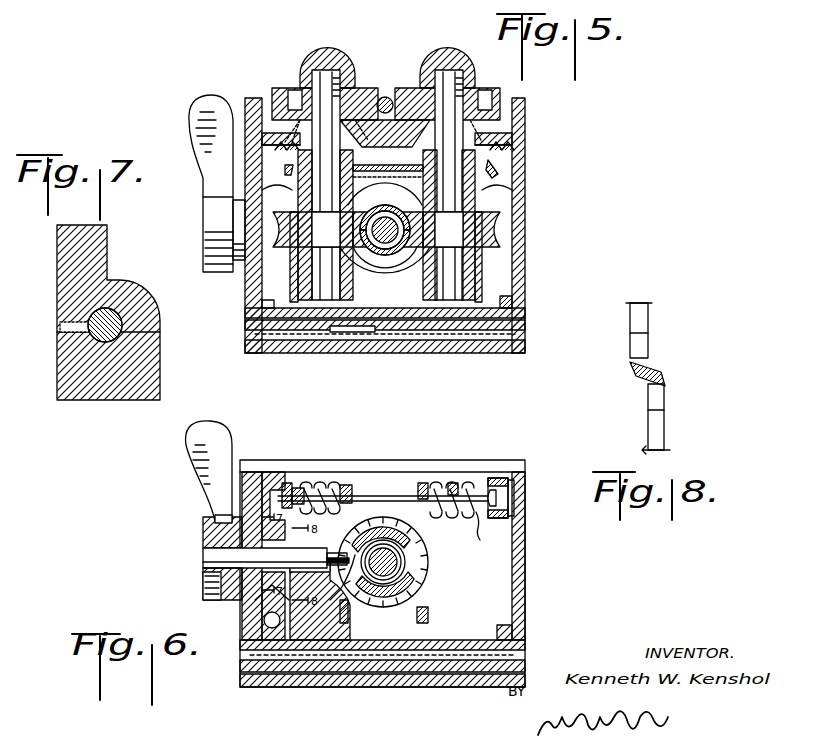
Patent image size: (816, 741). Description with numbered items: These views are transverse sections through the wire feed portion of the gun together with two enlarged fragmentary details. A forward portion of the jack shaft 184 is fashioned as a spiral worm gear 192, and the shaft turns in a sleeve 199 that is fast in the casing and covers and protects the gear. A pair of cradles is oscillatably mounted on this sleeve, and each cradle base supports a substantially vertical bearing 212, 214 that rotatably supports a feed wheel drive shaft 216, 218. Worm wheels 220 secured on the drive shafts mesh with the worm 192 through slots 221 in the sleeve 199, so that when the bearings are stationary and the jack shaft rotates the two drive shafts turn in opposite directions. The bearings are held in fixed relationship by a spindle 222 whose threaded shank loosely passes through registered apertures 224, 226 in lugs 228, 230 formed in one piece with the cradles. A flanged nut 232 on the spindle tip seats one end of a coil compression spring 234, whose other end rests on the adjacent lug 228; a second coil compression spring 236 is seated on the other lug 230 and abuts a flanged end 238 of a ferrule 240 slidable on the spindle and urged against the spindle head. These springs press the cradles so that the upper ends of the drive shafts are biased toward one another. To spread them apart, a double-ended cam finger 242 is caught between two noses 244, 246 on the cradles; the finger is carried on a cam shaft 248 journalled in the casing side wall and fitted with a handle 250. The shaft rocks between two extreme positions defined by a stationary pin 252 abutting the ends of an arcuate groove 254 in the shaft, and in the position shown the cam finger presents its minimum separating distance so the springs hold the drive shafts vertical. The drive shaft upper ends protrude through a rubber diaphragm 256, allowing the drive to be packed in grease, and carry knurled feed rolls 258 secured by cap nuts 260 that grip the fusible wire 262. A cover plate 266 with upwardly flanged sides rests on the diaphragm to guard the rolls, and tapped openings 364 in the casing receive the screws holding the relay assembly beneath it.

In FIG. 5, the jack shaft 184 is at (385, 222).
In FIG. 6, the jack shaft 184 is at (400, 570).
In FIG. 5, the worm gear 192 is at (395, 236).
In FIG. 6, the worm gear 192 is at (396, 562).
In FIG. 5, the sleeve 199 is at (385, 240).
In FIG. 6, the sleeve 199 is at (405, 535).
In FIG. 5, the bearing 212 is at (353, 158).
In FIG. 5, the bearing 214 is at (423, 158).
In FIG. 5, the feed wheel drive shaft 216 is at (312, 286).
In FIG. 5, the feed wheel drive shaft 218 is at (475, 292).
In FIG. 5, the worm wheel 220 is at (303, 212).
In FIG. 5, the slot 221 is at (380, 228).
In FIG. 6, the spindle 222 is at (398, 480).
In FIG. 6, the aperture 224 is at (352, 488).
In FIG. 6, the aperture 226 is at (450, 478).
In FIG. 6, the lug 228 is at (338, 478).
In FIG. 6, the lug 230 is at (424, 480).
In FIG. 6, the flanged nut 232 is at (283, 478).
In FIG. 6, the coil compression spring 234 is at (298, 478).
In FIG. 6, the coil compression spring 236 is at (462, 478).
In FIG. 6, the flanged end 238 is at (496, 478).
In FIG. 6, the ferrule 240 is at (478, 530).
In FIG. 8, the cam finger 242 is at (664, 374).
In FIG. 6, the nose 244 is at (367, 552).
In FIG. 8, the nose 244 is at (632, 326).
In FIG. 6, the nose 246 is at (340, 608).
In FIG. 8, the nose 246 is at (658, 408).
In FIG. 6, the cam shaft 248 is at (203, 558).
In FIG. 7, the cam shaft 248 is at (160, 337).
In FIG. 5, the handle 250 is at (196, 118).
In FIG. 6, the handle 250 is at (212, 498).
In FIG. 7, the pin 252 is at (58, 350).
In FIG. 7, the arcuate groove 254 is at (112, 292).
In FIG. 5, the rubber diaphragm 256 is at (525, 120).
In FIG. 5, the knurled feed roll 258 is at (282, 88).
In FIG. 5, the cap nut 260 is at (325, 58).
In FIG. 5, the wire 262 is at (385, 96).
In FIG. 5, the cover plate 266 is at (525, 134).
In FIG. 5, the tapped opening 364 is at (512, 302).